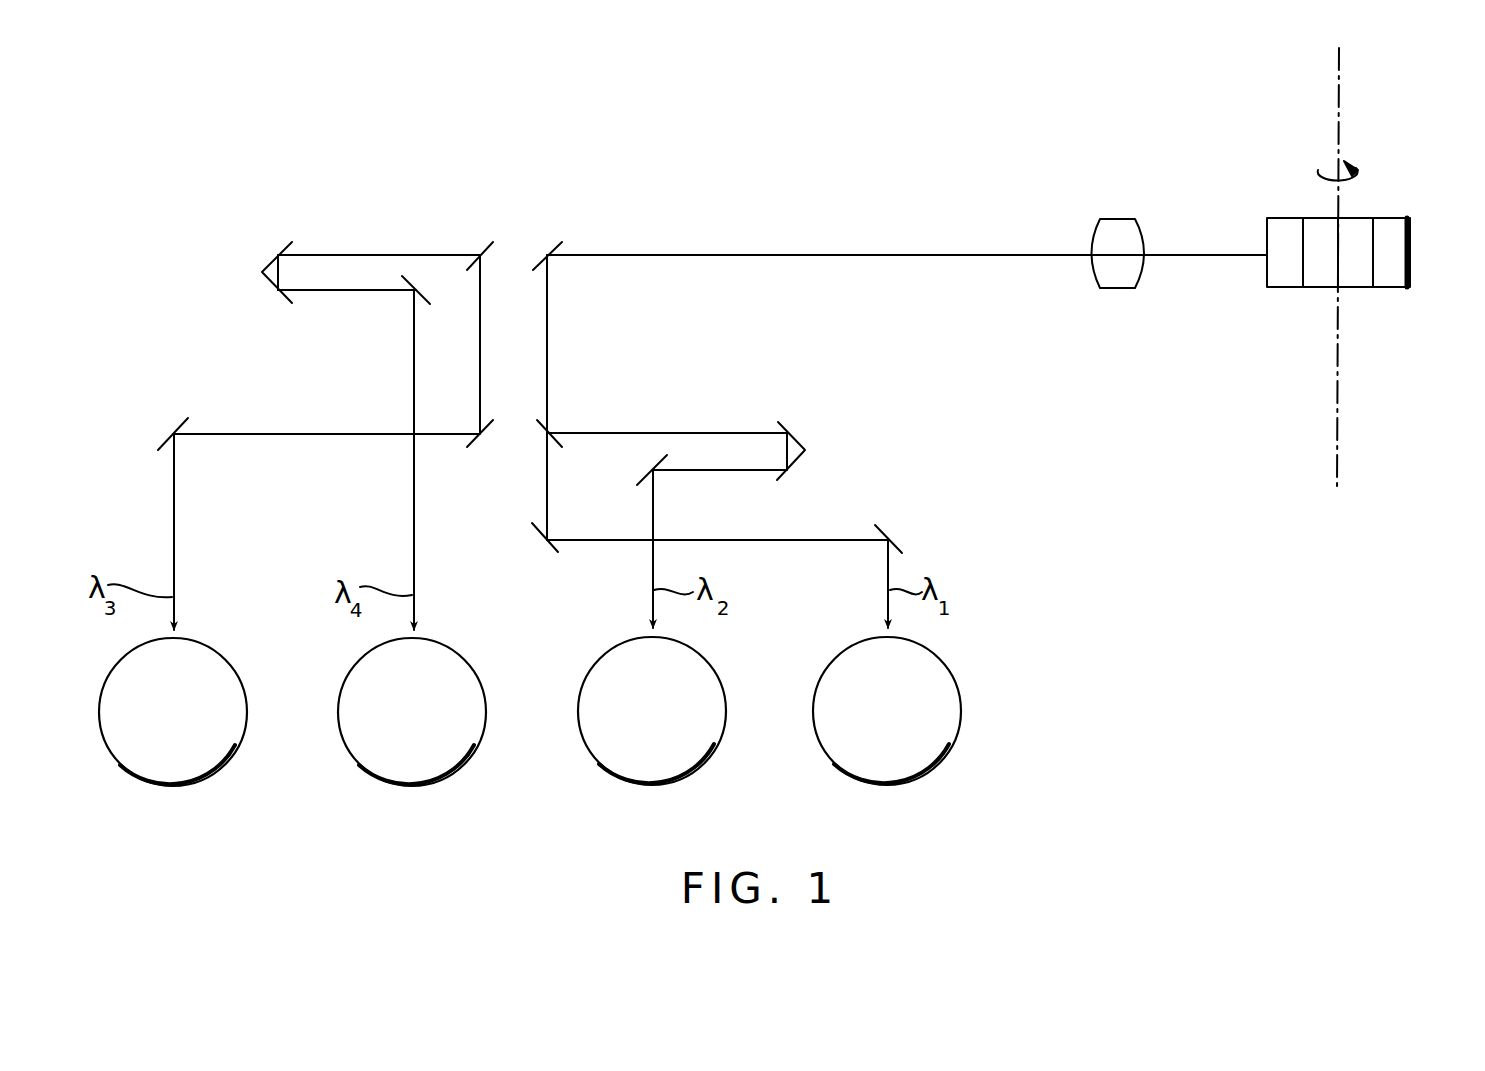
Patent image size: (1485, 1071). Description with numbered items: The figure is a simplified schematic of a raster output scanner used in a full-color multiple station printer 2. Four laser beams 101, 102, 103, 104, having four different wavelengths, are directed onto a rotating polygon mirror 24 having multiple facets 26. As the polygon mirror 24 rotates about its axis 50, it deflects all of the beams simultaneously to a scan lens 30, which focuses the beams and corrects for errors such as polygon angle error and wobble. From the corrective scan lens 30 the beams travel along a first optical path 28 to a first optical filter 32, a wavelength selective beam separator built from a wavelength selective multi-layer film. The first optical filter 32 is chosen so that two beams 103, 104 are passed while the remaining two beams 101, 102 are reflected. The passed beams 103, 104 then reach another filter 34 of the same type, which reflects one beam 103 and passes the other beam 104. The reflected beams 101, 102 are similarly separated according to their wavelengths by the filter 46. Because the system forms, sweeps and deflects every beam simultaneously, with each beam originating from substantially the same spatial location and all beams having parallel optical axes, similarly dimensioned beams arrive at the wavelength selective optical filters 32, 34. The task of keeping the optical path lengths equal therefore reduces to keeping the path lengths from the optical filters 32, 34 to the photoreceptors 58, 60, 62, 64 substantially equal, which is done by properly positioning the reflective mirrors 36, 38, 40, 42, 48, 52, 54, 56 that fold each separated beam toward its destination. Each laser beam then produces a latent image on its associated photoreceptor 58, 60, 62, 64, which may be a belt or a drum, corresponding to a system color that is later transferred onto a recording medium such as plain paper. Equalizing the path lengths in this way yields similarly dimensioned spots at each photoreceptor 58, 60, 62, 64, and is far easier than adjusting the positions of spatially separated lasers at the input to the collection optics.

The multiple station printer 2 is at (925, 127).
The polygon mirror 24 is at (1375, 216).
The facets 26 is at (1385, 287).
The first optical path 28 is at (927, 254).
The scan lens 30 is at (1117, 288).
The first optical filter 32 is at (562, 241).
The filter 34 is at (493, 241).
The reflective mirror 36 is at (280, 253).
The reflective mirror 38 is at (407, 296).
The reflective mirror 40 is at (165, 445).
The reflective mirror 42 is at (487, 450).
The filter 46 is at (565, 432).
The reflective mirror 48 is at (548, 557).
The axis 50 is at (1339, 125).
The reflective mirror 52 is at (800, 440).
The reflective mirror 54 is at (645, 475).
The reflective mirror 56 is at (895, 528).
The photoreceptor 58 is at (182, 762).
The photoreceptor 60 is at (418, 762).
The photoreceptor 62 is at (660, 765).
The photoreceptor 64 is at (888, 765).
The laser beam 101 is at (640, 397).
The laser beam 102 is at (547, 338).
The laser beam 103 is at (483, 297).
The laser beam 104 is at (387, 254).